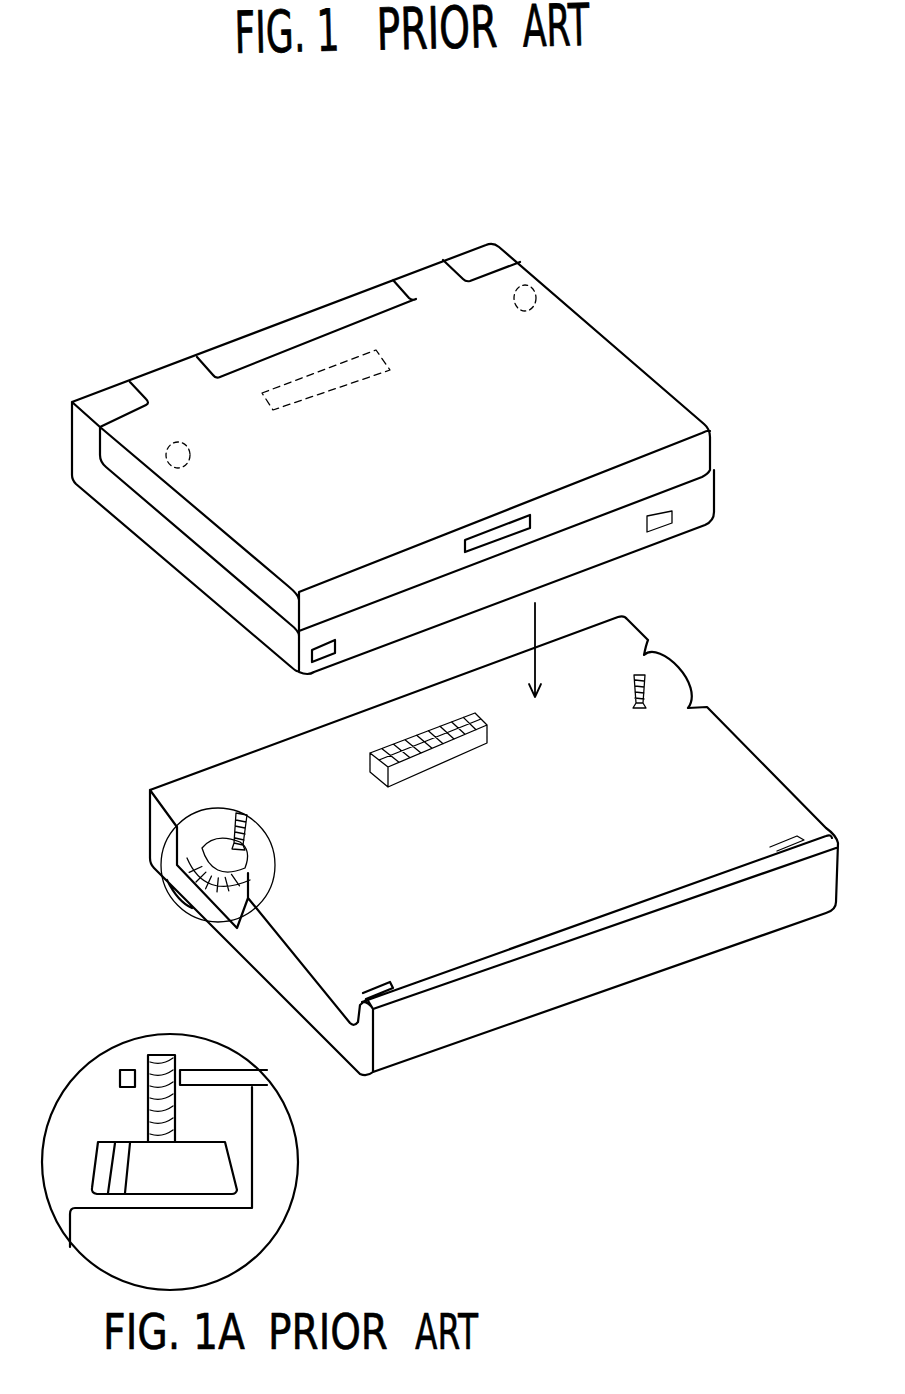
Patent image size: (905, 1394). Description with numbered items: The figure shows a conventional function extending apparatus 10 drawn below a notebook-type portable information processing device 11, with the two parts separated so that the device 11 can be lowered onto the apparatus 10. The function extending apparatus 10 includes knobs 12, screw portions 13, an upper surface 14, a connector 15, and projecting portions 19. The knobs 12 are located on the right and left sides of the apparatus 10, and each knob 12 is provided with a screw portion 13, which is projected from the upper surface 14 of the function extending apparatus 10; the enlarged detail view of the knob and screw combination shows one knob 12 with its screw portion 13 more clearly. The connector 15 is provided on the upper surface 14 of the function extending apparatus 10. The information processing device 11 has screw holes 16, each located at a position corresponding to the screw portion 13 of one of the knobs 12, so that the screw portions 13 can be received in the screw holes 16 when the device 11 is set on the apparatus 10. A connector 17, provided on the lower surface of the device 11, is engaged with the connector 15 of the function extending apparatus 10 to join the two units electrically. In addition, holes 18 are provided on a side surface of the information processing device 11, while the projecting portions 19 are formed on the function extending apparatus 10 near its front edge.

In FIG. 1, the function extending apparatus 10 is at (762, 697).
In FIG. 1, the notebook-type portable information processing device 11 is at (578, 262).
In FIG. 1, the knob 12 is at (160, 872).
In FIG. 1A, the knob 12 is at (97, 1167).
In FIG. 1, the screw portion 13 is at (250, 812).
In FIG. 1A, the screw portion 13 is at (145, 1062).
In FIG. 1, the upper surface 14 is at (655, 796).
In FIG. 1, the connector 15 is at (450, 743).
In FIG. 1, the screw hole 16 is at (166, 470).
In FIG. 1, the connector 17 is at (346, 392).
In FIG. 1, the hole 18 is at (672, 522).
In FIG. 1, the projecting portion 19 is at (773, 835).